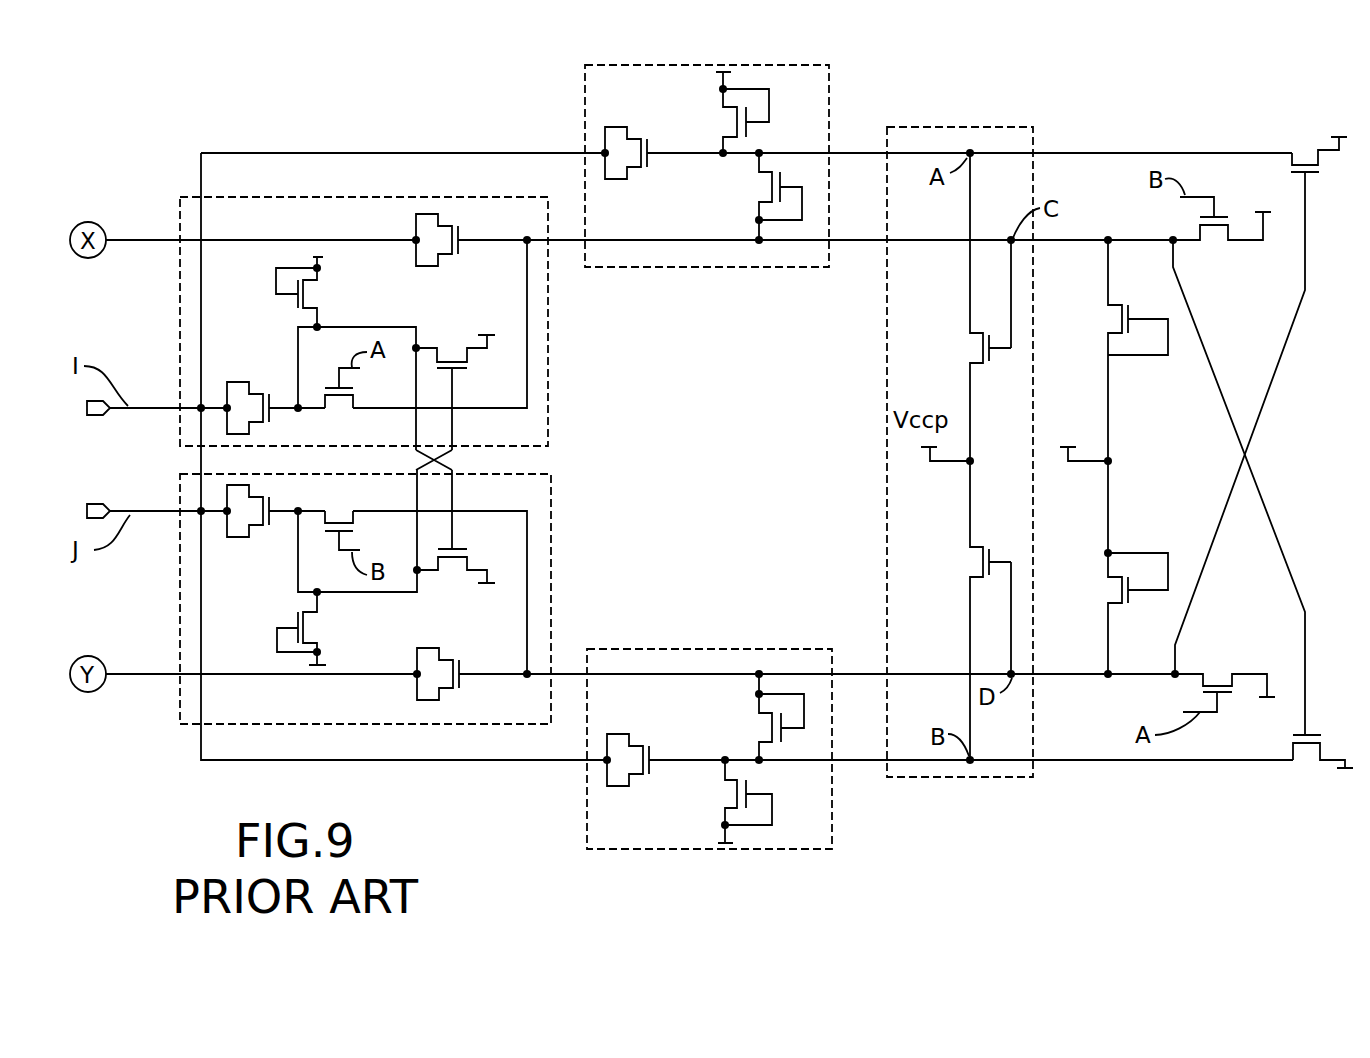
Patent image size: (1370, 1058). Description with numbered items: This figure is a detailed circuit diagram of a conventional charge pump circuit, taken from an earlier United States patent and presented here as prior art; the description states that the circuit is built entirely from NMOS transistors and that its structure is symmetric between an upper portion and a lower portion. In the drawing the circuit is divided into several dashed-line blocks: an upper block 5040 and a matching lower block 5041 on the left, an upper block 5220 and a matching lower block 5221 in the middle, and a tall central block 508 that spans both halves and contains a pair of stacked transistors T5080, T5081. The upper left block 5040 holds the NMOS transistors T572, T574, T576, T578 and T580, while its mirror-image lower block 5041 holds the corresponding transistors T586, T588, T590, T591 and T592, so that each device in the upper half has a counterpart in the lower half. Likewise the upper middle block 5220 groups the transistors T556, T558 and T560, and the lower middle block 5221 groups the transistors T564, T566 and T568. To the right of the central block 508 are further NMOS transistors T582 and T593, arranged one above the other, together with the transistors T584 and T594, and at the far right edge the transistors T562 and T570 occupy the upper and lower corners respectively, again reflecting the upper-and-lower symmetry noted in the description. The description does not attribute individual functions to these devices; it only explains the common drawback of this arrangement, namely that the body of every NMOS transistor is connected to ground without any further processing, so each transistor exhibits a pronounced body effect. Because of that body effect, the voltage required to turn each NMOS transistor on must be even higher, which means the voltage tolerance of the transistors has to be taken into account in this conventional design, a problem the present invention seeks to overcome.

The first latch circuit 5040 is at (548, 333).
The second latch circuit 5041 is at (551, 578).
The first inverter circuit 5220 is at (733, 267).
The second inverter circuit 5221 is at (733, 649).
The sense amplifier circuit 508 is at (963, 127).
The first sense transistor T5080 is at (968, 349).
The second sense transistor T5081 is at (968, 562).
The pass transistor T556 is at (617, 184).
The load transistor T558 is at (722, 120).
The drive transistor T560 is at (758, 192).
The pull-up transistor T562 is at (1303, 150).
The pass transistor T564 is at (620, 735).
The drive transistor T566 is at (724, 795).
The load transistor T568 is at (759, 731).
The pull-down transistor T570 is at (1311, 768).
The input pass transistor T572 is at (237, 378).
The latch transistor T574 is at (337, 410).
The latch transistor T576 is at (452, 346).
The load transistor T578 is at (320, 290).
The output pass transistor T580 is at (414, 224).
The load transistor T582 is at (1108, 318).
The transistor T584 is at (1215, 243).
The input pass transistor T586 is at (237, 540).
The latch transistor T588 is at (338, 514).
The latch transistor T590 is at (452, 570).
The load transistor T591 is at (322, 624).
The output pass transistor T592 is at (417, 693).
The load transistor T593 is at (1108, 590).
The transistor T594 is at (1220, 666).